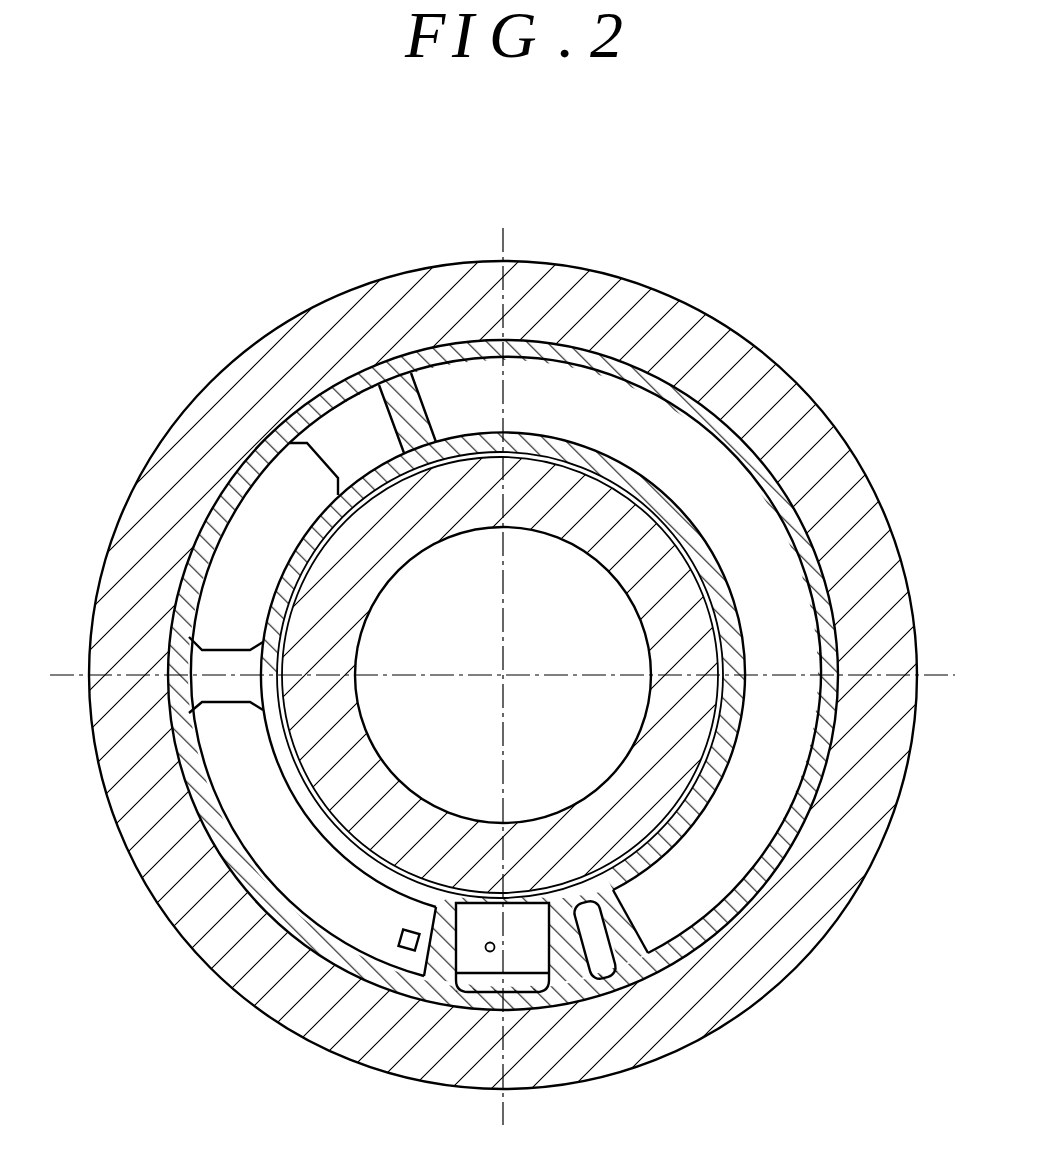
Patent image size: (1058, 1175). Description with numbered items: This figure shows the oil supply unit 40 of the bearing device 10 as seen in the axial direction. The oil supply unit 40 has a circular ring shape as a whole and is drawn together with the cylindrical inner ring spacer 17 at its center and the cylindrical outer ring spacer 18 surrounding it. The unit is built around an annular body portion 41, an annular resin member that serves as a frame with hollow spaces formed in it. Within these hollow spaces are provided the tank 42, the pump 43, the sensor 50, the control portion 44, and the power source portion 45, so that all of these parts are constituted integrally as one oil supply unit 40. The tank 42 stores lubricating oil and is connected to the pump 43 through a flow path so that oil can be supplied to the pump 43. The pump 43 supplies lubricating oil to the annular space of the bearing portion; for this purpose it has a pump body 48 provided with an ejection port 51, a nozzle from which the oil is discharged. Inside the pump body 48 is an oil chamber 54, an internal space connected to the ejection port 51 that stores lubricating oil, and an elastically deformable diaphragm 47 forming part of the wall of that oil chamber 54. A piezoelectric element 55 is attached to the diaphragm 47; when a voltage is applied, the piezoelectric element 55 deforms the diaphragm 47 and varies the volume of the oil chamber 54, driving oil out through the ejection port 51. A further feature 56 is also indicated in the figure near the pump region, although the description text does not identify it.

The bearing device 10 is at (747, 341).
The inner ring spacer 17 is at (358, 763).
The outer ring spacer 18 is at (143, 787).
The oil supply unit 40 is at (580, 347).
The body portion 41 is at (405, 405).
The tank 42 is at (757, 550).
The pump 43 is at (467, 958).
The control portion 44 is at (282, 870).
The power source portion 45 is at (228, 537).
The diaphragm 47 is at (537, 957).
The pump body 48 is at (553, 937).
The sensor 50 is at (400, 946).
The ejection port 51 is at (490, 958).
The oil chamber 54 is at (483, 920).
The piezoelectric element 55 is at (523, 957).
The groove 56 is at (533, 918).